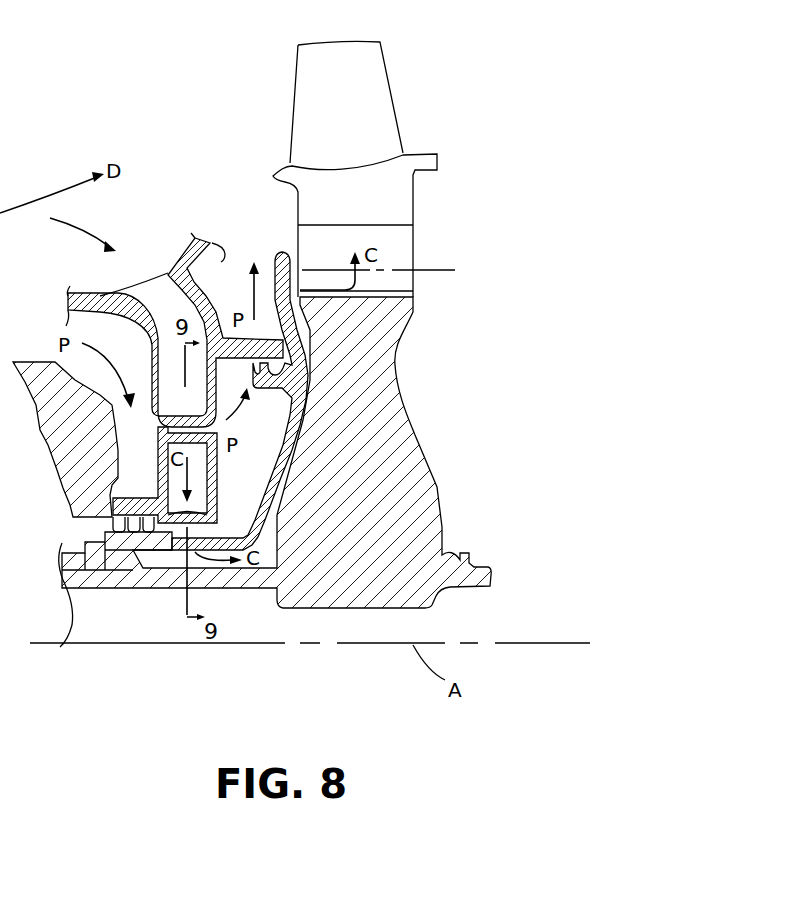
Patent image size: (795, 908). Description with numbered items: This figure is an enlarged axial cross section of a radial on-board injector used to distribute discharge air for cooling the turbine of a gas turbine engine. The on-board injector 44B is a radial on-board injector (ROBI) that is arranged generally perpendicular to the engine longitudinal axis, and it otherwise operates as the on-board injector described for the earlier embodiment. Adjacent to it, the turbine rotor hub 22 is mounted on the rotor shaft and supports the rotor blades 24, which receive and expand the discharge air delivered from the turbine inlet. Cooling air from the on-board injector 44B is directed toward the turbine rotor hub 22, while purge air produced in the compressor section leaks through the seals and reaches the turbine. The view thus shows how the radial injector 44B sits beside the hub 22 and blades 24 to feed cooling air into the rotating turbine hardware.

The turbine rotor hub 22 is at (395, 465).
The rotor blades 24 is at (357, 105).
The radial on-board injector 44B is at (229, 272).